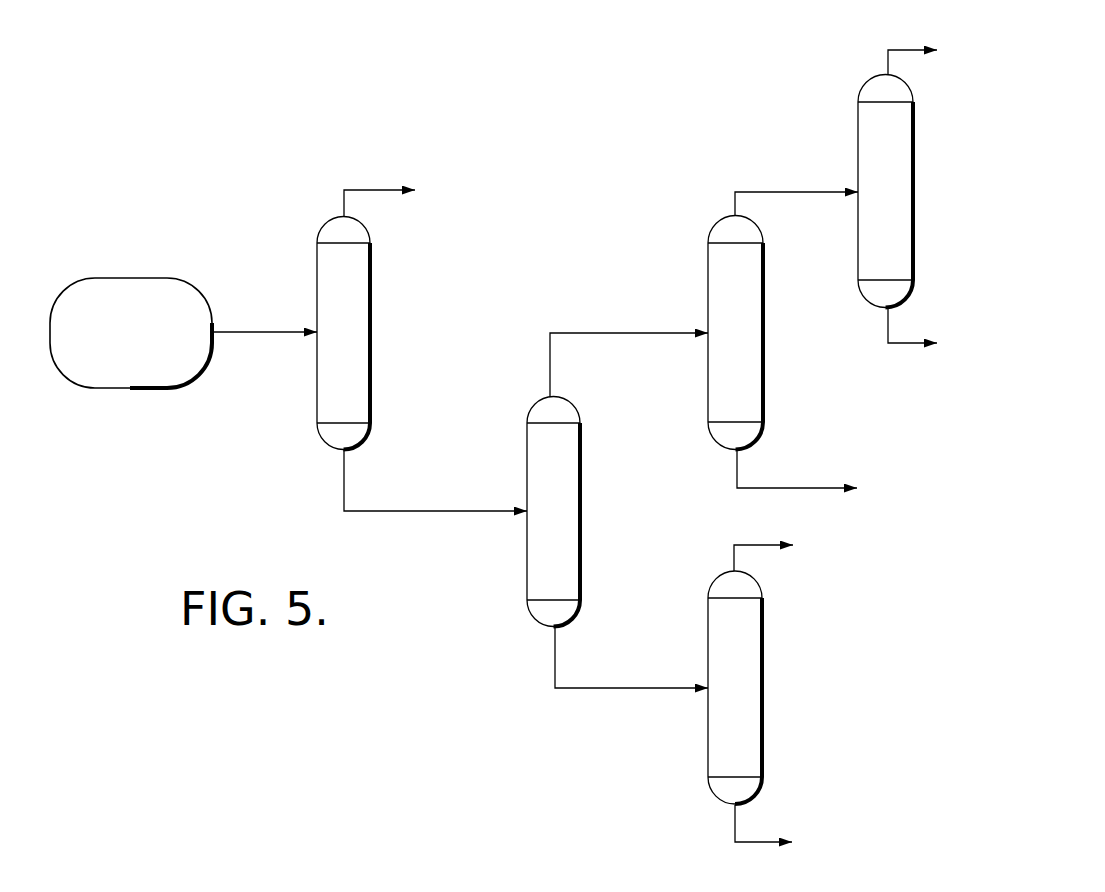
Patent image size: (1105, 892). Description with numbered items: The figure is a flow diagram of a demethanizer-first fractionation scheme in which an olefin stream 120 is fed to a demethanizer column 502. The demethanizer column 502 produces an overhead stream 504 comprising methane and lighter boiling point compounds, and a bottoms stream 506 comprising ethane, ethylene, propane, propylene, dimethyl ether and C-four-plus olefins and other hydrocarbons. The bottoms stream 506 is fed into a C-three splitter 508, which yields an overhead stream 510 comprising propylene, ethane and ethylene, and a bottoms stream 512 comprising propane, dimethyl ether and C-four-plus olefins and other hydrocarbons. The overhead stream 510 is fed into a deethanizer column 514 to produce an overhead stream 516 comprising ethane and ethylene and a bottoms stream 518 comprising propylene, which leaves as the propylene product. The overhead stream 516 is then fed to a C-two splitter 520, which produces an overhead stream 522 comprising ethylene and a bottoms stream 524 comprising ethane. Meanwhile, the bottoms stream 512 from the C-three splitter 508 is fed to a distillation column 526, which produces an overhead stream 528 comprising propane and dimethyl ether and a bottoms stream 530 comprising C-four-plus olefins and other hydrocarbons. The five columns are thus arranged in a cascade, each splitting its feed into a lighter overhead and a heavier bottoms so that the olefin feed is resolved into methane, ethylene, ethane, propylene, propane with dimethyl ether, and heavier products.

The olefin stream 120 is at (260, 333).
The demethanizer column 502 is at (343, 333).
The overhead stream 504 is at (363, 190).
The bottoms stream 506 is at (383, 510).
The C3 splitter 508 is at (553, 512).
The overhead stream 510 is at (613, 332).
The bottoms stream 512 is at (580, 690).
The deethanizer column 514 is at (735, 333).
The overhead stream 516 is at (733, 212).
The bottoms stream 518 is at (806, 492).
The C2 splitter 520 is at (885, 190).
The overhead stream 522 is at (905, 50).
The bottoms stream 524 is at (887, 336).
The distillation column 526 is at (735, 687).
The overhead stream 528 is at (733, 566).
The bottoms stream 530 is at (748, 843).